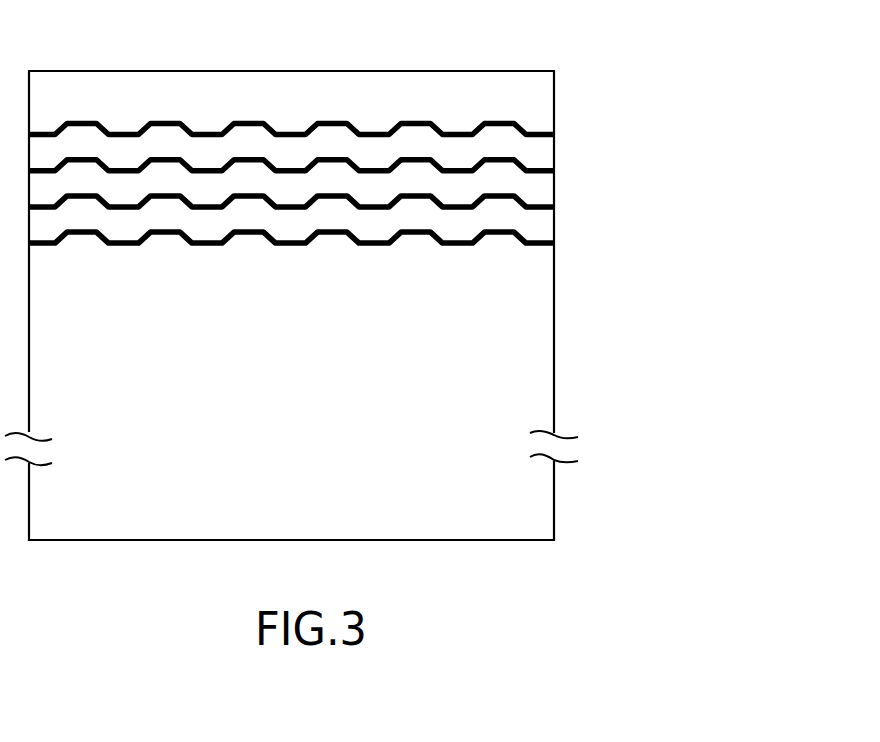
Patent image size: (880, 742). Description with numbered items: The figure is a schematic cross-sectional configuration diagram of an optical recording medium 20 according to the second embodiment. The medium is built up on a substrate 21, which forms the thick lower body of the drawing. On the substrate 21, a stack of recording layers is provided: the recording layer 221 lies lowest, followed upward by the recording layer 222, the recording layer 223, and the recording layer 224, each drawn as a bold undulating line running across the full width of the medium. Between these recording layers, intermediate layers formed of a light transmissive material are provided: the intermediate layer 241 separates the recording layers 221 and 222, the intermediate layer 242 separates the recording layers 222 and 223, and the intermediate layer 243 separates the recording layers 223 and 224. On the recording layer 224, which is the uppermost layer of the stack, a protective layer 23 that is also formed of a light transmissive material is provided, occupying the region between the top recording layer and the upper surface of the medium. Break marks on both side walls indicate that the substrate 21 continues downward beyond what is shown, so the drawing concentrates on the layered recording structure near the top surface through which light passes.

The optical recording medium 20 is at (613, 42).
The substrate 21 is at (522, 362).
The protective layer 23 is at (547, 95).
The recording layer (L0) 221 is at (553, 232).
The recording layer (L1) 222 is at (540, 200).
The recording layer (L2) 223 is at (547, 158).
The recording layer (L3) 224 is at (547, 123).
The intermediate layer 241 is at (533, 222).
The intermediate layer 242 is at (545, 185).
The intermediate layer 243 is at (547, 147).